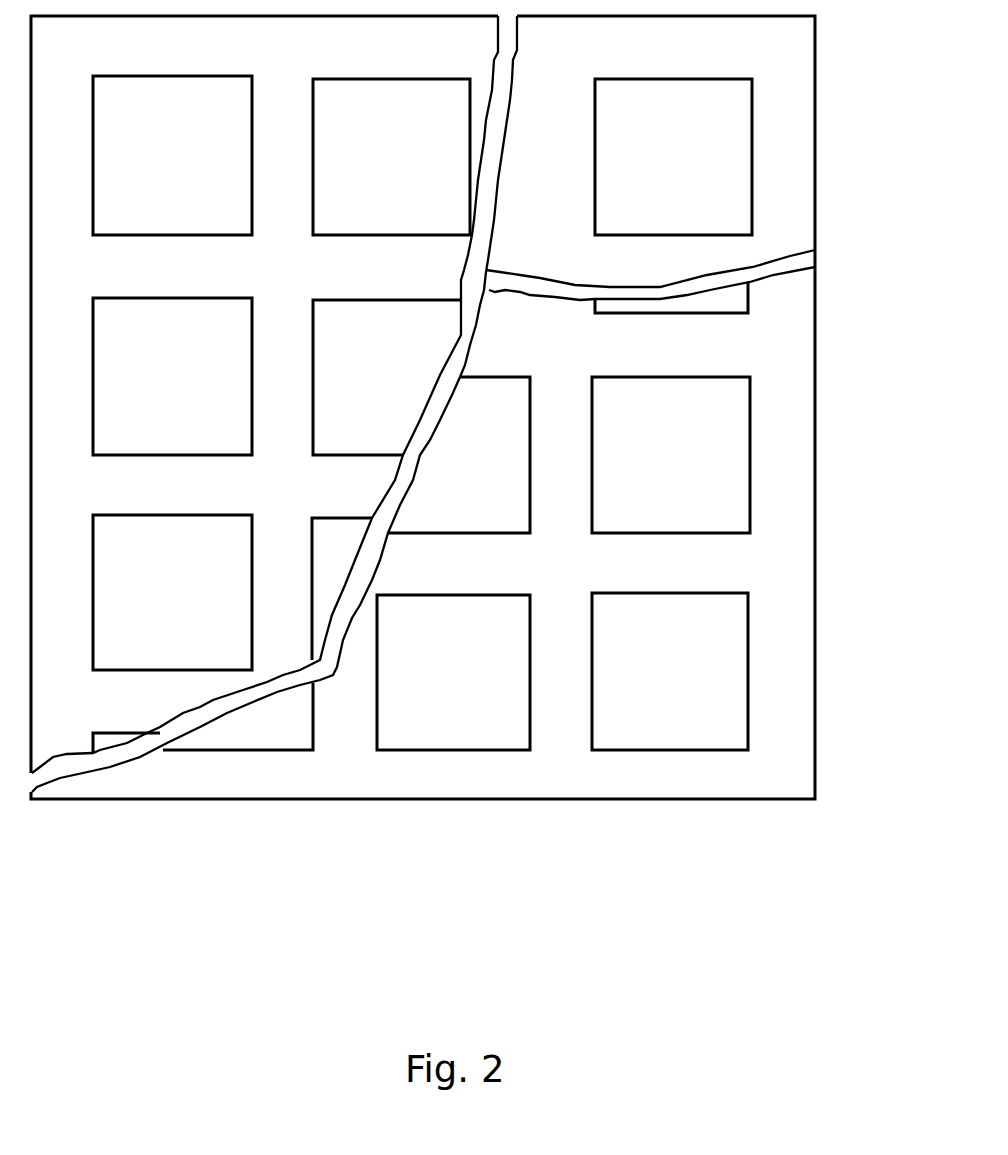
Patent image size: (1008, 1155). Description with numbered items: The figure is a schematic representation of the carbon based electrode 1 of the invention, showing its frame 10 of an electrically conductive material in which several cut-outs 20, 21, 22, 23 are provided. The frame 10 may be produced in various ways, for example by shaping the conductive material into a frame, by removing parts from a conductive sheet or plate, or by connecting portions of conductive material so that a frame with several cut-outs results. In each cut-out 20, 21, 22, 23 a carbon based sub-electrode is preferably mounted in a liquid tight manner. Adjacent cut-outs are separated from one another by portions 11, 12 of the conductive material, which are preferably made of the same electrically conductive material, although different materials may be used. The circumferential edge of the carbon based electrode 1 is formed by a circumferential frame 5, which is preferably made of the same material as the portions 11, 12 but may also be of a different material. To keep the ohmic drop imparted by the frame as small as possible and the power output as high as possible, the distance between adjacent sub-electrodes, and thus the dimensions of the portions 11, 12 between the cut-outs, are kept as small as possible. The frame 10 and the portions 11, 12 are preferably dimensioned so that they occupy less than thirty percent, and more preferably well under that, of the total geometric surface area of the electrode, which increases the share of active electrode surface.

The frame 10 is at (115, 806).
The carbon based electrode 1 is at (245, 767).
The portion of conductive material 11 is at (355, 683).
The cut-out 21 is at (439, 707).
The circumferential frame 5 is at (549, 768).
The cut-out 20 is at (695, 692).
The cut-out 22 is at (459, 455).
The cut-out 23 is at (688, 467).
The portion of conductive material 12 is at (688, 548).